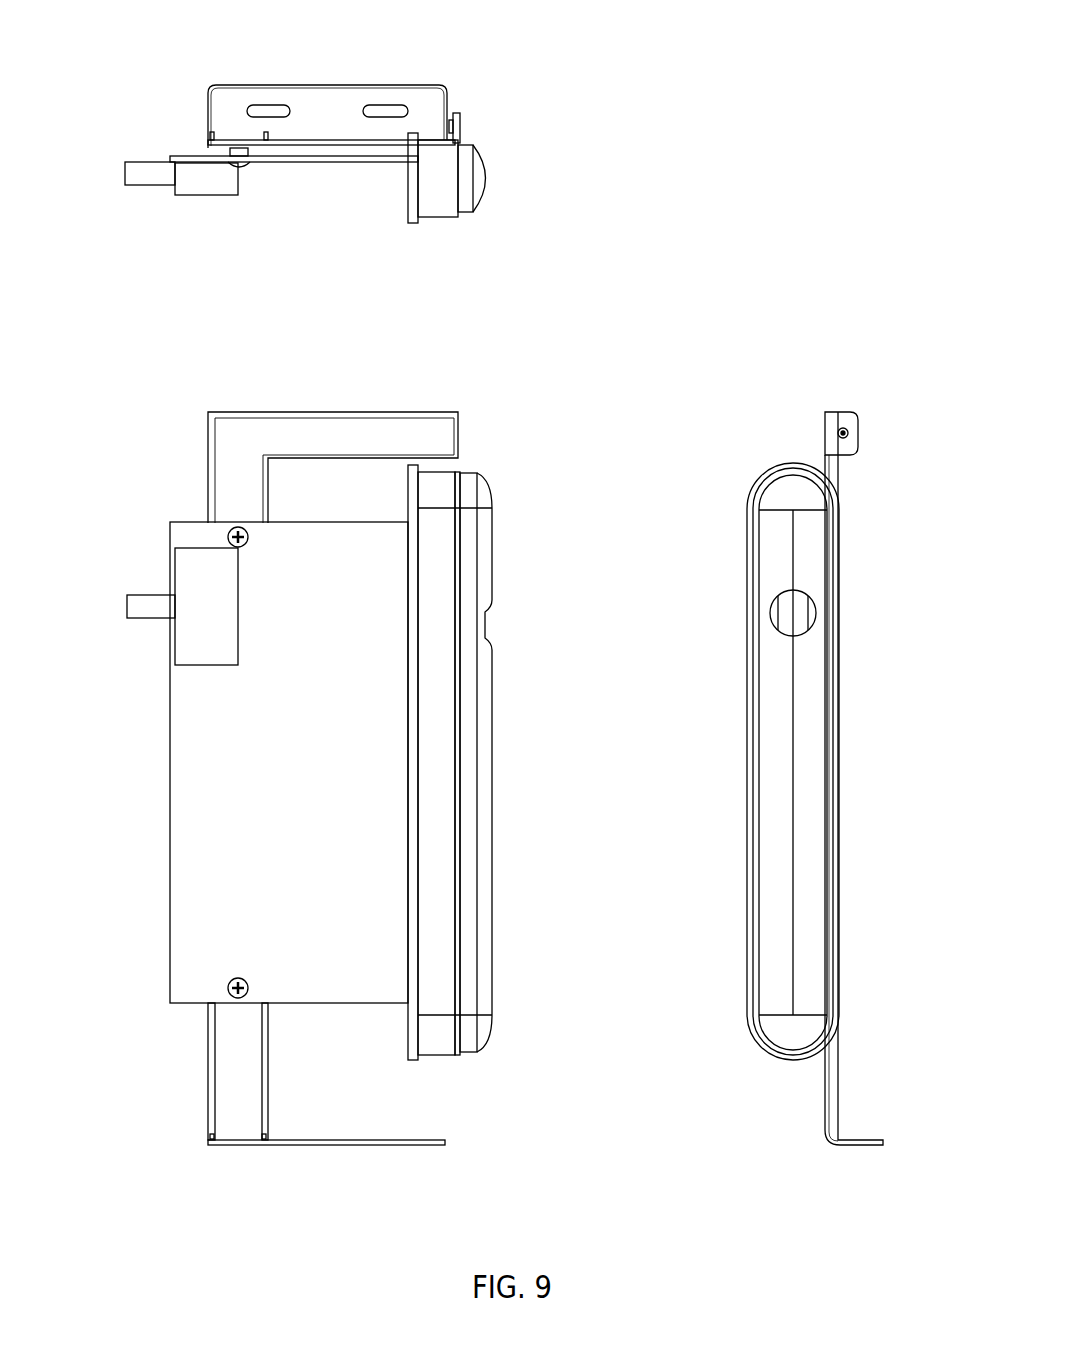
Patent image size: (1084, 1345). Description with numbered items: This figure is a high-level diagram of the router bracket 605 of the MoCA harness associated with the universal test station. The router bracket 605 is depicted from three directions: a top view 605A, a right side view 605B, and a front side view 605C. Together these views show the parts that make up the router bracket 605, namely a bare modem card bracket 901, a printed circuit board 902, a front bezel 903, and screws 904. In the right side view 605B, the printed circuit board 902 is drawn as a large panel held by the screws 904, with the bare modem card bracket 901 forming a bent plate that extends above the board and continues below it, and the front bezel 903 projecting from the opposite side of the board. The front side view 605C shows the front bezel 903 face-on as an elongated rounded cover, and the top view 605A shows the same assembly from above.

The router bracket 605 is at (742, 50).
The top view 605A is at (410, 68).
The right side view 605B is at (373, 350).
The front side view 605C is at (816, 356).
The bare modem card bracket 901 is at (437, 427).
The printed circuit board 902 is at (187, 537).
The front bezel 903 is at (487, 823).
The screws 904 is at (237, 978).